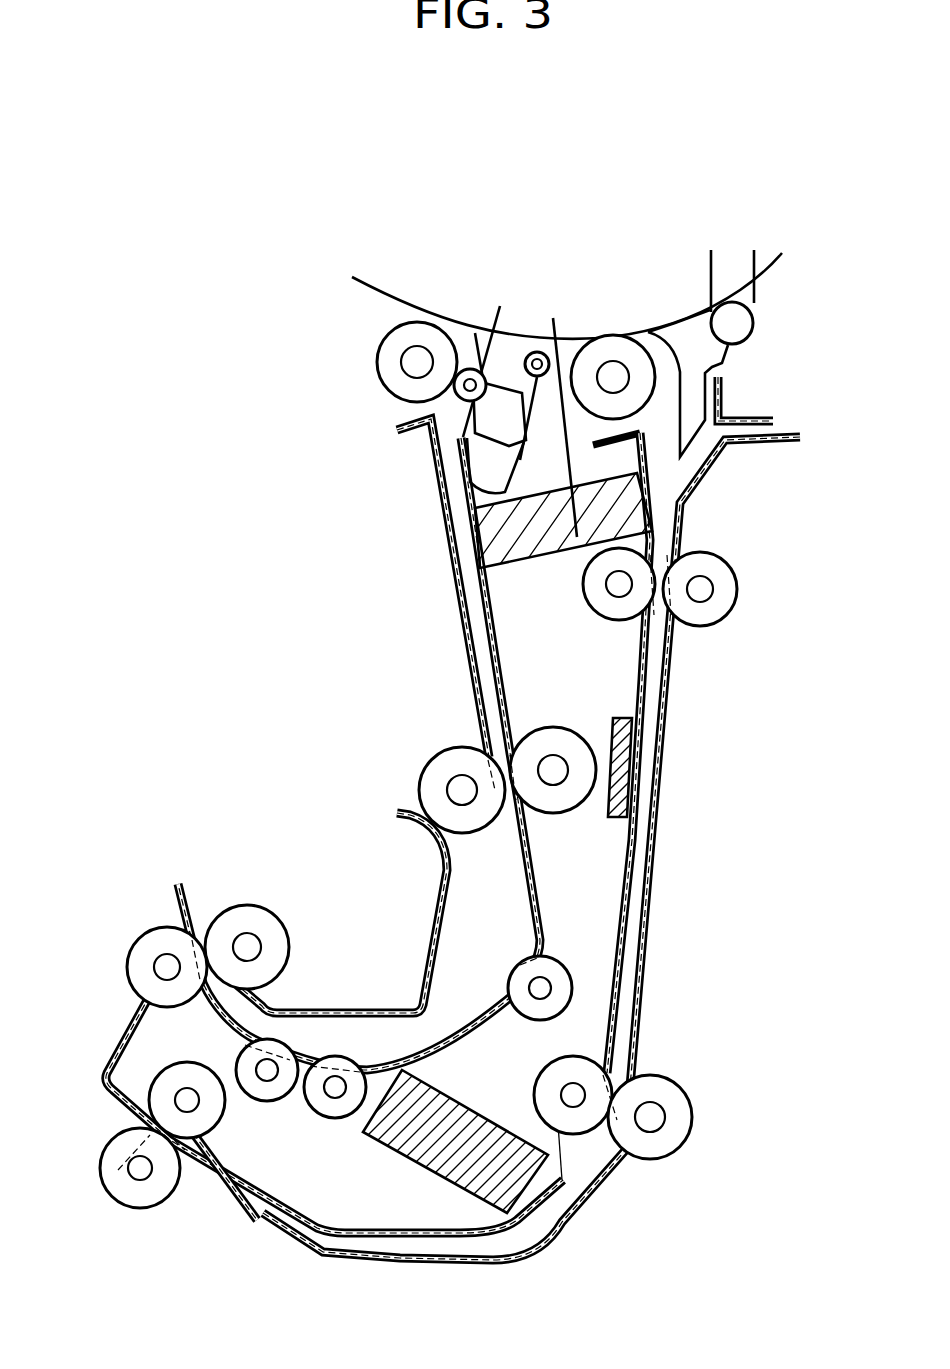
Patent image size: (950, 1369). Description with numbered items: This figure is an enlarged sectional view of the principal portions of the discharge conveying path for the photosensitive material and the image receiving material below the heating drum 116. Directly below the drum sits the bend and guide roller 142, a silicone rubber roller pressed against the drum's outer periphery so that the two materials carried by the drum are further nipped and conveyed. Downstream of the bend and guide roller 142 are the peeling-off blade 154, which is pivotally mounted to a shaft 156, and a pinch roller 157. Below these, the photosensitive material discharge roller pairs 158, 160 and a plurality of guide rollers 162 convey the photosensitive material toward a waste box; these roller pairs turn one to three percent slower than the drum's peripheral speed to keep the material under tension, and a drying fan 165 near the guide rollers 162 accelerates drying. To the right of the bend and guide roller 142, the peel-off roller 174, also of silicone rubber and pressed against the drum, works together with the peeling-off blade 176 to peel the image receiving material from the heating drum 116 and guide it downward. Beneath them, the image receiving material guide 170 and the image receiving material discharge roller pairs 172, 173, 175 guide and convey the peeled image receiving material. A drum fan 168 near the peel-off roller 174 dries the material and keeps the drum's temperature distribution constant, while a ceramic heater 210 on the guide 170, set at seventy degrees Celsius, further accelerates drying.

The heating drum 116 is at (375, 289).
The bend and guide roller 142 is at (377, 361).
The peeling-off blade 154 is at (487, 330).
The shaft 156 is at (541, 350).
The pinch roller 157 is at (466, 369).
The peel-off roller 174 is at (618, 336).
The peeling-off blade 176 is at (672, 315).
The drum fan 168 is at (527, 567).
The photosensitive material discharge roller pair 158 is at (448, 756).
The image receiving material discharge roller pair 172 is at (620, 620).
The photosensitive material discharge roller pair 160 is at (247, 906).
The ceramic heater 210 is at (607, 818).
The image receiving material guide 170 is at (656, 880).
The guide rollers 162 is at (572, 972).
The image receiving material discharge roller pair 173 is at (693, 1103).
The image receiving material discharge roller pair 175 is at (163, 1090).
The drying fan 165 is at (433, 1173).